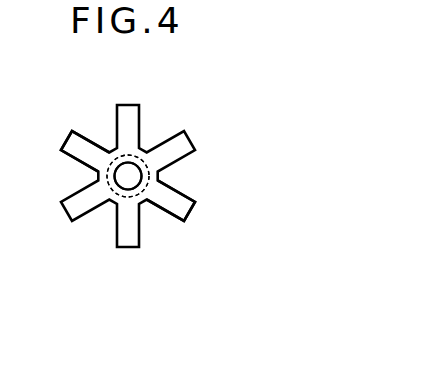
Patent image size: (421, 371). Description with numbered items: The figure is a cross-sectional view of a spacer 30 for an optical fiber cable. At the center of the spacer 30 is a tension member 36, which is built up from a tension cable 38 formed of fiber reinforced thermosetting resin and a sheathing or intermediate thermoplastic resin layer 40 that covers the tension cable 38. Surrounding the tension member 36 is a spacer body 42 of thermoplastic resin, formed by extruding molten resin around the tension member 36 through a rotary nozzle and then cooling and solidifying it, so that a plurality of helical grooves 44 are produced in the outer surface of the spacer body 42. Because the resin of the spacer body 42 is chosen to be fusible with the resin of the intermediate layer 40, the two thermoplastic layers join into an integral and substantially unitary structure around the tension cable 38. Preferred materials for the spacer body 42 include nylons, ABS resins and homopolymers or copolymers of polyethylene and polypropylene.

The spacer 30 is at (172, 246).
The tension member 36 is at (272, 73).
The tension cable 38 is at (131, 166).
The intermediate thermoplastic resin layer 40 is at (147, 175).
The spacer body 42 is at (176, 197).
The helical grooves 44 is at (110, 142).